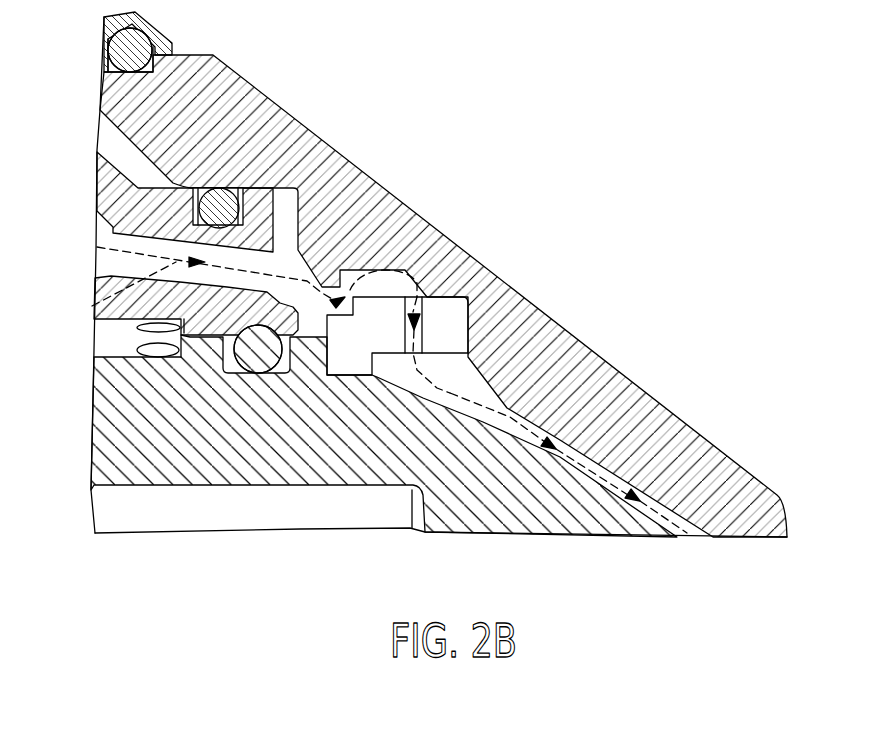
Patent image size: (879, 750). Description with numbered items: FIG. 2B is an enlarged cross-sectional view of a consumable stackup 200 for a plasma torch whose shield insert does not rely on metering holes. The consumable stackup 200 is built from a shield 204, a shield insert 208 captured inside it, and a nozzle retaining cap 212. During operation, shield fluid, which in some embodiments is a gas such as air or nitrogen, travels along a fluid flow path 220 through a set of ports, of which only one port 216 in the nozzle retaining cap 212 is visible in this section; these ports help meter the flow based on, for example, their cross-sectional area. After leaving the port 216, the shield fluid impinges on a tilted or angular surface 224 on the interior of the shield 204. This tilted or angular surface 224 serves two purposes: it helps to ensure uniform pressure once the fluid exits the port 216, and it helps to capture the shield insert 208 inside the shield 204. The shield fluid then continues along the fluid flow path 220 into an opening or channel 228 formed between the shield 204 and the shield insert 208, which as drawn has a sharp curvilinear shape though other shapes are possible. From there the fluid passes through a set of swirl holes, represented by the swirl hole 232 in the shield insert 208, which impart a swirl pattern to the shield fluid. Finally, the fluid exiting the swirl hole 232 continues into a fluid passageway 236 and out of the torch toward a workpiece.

The consumable stackup 200 is at (462, 195).
The shield 204 is at (547, 318).
The shield insert 208 is at (447, 315).
The nozzle retaining cap 212 is at (260, 200).
The port 216 is at (165, 246).
The fluid flow path 220 is at (88, 303).
The tilted or angular surface 224 is at (312, 262).
The opening or channel 228 is at (385, 298).
The swirl hole 232 is at (422, 308).
The fluid passageway 236 is at (588, 465).